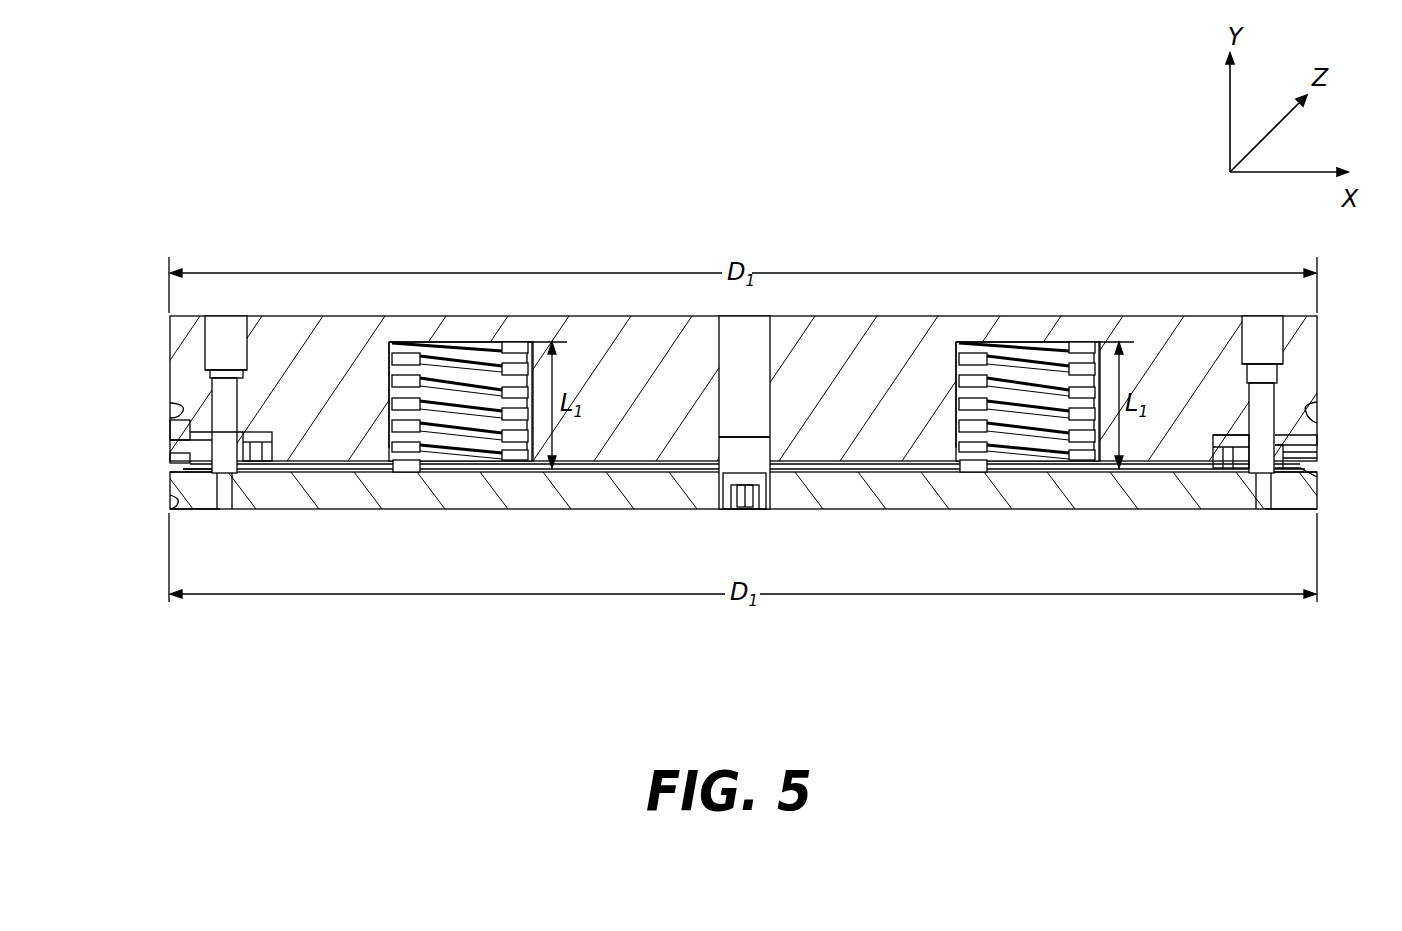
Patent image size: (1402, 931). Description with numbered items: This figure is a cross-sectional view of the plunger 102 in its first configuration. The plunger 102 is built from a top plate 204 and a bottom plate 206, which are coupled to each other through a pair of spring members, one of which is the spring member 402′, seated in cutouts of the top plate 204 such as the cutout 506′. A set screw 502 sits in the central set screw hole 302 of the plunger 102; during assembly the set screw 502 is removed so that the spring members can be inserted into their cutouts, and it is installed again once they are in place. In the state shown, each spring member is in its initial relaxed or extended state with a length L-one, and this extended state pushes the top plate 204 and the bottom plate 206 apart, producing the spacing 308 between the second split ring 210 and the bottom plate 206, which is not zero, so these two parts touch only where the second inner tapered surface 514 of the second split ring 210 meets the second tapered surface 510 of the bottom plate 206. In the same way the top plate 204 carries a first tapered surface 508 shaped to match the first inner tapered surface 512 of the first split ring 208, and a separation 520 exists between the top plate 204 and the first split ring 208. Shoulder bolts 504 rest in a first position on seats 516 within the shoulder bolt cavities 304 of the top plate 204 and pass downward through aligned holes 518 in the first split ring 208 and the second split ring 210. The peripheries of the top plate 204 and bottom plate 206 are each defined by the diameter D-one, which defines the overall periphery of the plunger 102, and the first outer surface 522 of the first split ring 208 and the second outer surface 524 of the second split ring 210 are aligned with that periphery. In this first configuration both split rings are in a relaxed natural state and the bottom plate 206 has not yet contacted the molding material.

The plunger 102 is at (929, 205).
The top plate 204 is at (608, 316).
The bottom plate 206 is at (318, 510).
The first split ring 208 is at (180, 443).
The second split ring 210 is at (183, 471).
The central set screw hole 302 is at (752, 325).
The shoulder bolt cavities 304 is at (220, 316).
The spacing 308 is at (853, 473).
The first spring member 402′ is at (492, 340).
The set screw 502 is at (747, 437).
The shoulder bolts 504 is at (208, 370).
The first cutout 506′ is at (392, 386).
The first tapered surface 508 is at (170, 406).
The second tapered surface 510 is at (175, 510).
The first inner tapered surface 512 is at (172, 460).
The second inner tapered surface 514 is at (173, 480).
The seats 516 is at (208, 382).
The aligned holes 518 is at (250, 442).
The separation 520 is at (205, 432).
The first outer surface 522 is at (170, 430).
The second outer surface 524 is at (180, 473).